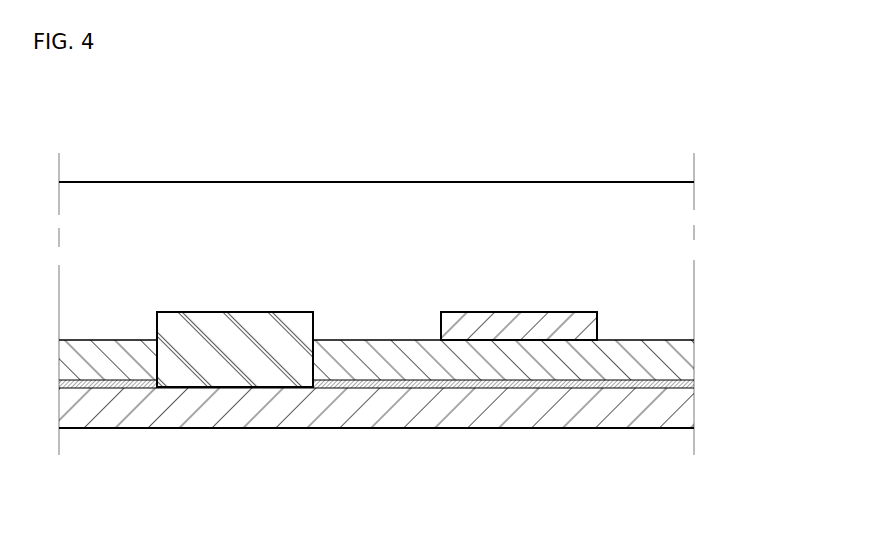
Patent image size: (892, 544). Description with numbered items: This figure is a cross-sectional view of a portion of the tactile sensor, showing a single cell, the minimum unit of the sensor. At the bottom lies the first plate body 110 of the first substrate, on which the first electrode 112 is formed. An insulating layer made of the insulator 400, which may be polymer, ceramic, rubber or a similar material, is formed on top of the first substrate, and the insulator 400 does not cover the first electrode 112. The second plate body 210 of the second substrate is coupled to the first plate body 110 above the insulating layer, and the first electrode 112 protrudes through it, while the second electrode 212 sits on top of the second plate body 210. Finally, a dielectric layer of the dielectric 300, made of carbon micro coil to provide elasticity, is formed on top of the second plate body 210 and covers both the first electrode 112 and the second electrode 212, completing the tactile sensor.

The dielectric 300 is at (515, 197).
The second plate body 210 is at (653, 350).
The second electrode 212 is at (577, 322).
The insulator 400 is at (600, 383).
The first plate body 110 is at (477, 405).
The first electrode 112 is at (247, 372).